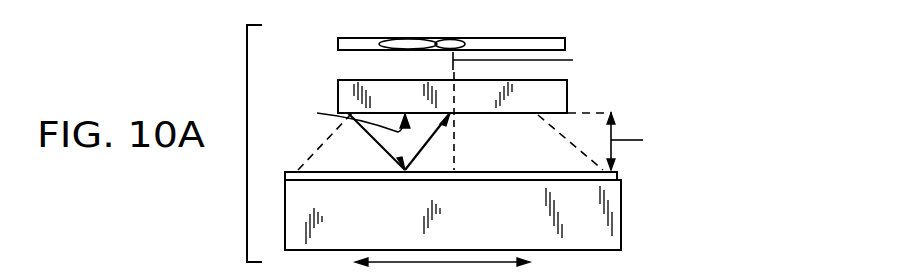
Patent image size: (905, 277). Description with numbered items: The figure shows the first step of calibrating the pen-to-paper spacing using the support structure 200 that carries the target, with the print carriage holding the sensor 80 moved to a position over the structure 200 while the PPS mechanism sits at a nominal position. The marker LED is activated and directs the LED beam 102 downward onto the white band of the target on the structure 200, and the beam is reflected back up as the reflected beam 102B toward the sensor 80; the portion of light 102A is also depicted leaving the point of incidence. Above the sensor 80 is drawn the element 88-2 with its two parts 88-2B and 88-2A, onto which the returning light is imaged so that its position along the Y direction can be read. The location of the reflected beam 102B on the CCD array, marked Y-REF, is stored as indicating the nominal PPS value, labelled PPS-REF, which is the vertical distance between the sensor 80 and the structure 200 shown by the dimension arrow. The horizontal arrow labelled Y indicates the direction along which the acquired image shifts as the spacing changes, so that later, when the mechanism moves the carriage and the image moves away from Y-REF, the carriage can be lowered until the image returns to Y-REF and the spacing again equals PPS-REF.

The lens plate 88-2 is at (364, 38).
The lens element 88-2B is at (402, 40).
The lens element 88-2A is at (462, 39).
The sensor 80 is at (350, 98).
The LED beam 102 is at (397, 162).
The reflected light beam 102A is at (425, 146).
The reflected beam 102B is at (336, 115).
The support structure 200 is at (293, 215).
The reflected beam location on the CCD array Y-REF is at (540, 110).
The nominal PPS value PPS-REF is at (665, 141).
The Y direction Y is at (457, 262).